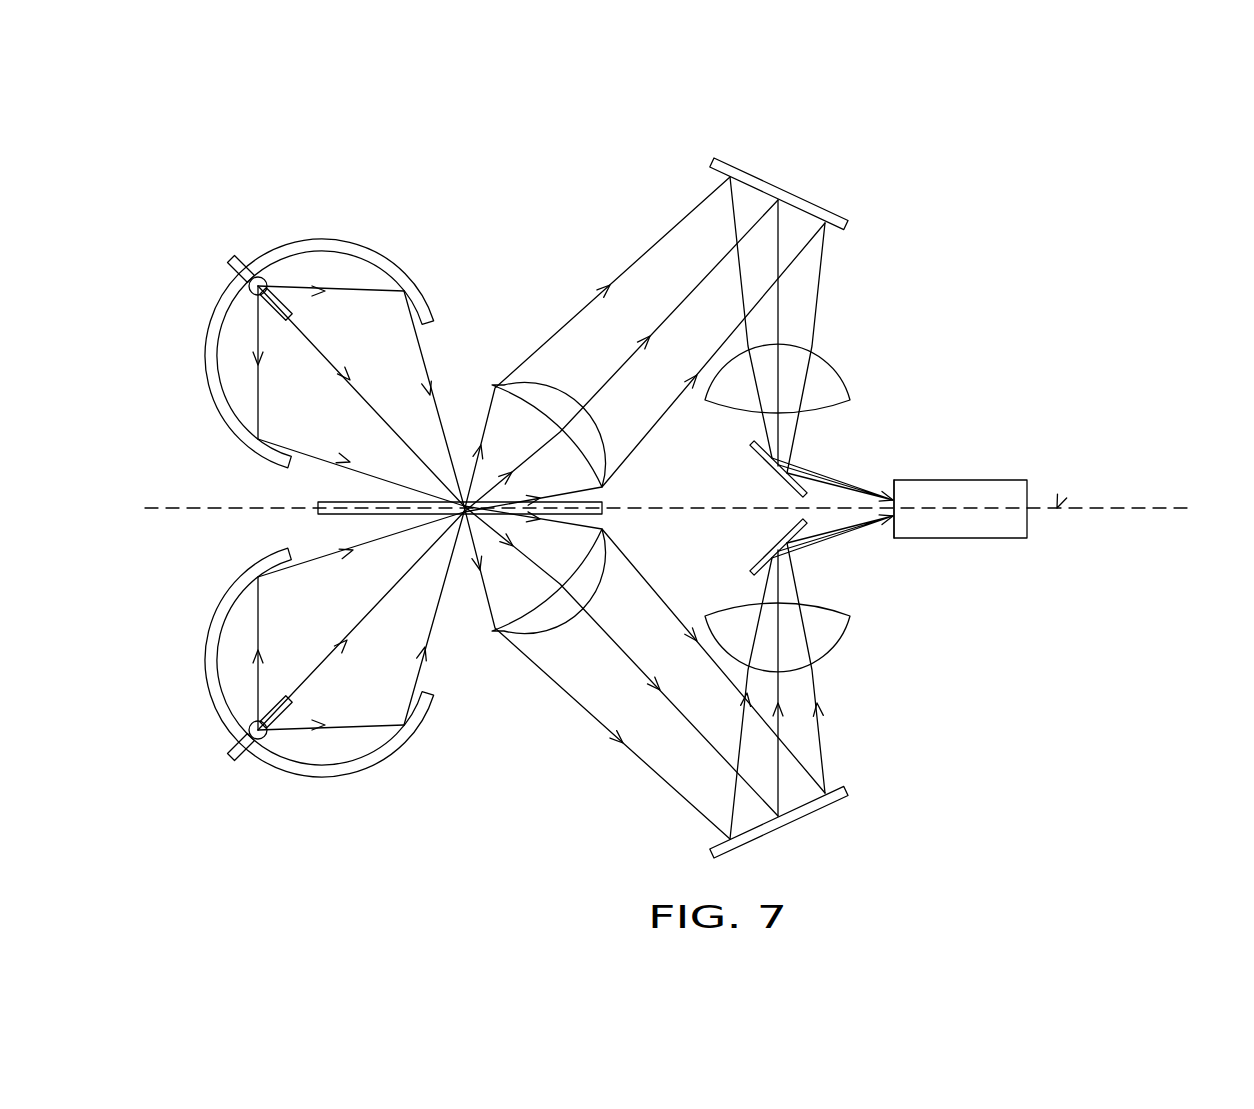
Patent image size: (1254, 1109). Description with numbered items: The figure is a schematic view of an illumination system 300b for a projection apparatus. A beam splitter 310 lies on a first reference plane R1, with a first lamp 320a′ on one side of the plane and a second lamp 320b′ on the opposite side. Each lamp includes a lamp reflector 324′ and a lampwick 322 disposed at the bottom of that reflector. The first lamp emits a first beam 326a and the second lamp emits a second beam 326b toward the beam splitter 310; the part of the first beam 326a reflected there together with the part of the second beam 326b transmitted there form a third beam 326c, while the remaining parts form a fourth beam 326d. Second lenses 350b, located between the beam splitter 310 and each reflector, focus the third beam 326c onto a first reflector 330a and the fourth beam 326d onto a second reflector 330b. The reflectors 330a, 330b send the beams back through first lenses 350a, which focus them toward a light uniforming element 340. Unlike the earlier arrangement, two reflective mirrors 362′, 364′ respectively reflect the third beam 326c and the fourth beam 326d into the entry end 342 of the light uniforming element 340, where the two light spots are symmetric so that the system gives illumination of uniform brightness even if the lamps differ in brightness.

The illumination system 300b is at (1233, 847).
The beam splitter 310 is at (322, 511).
The first lamp 320a′ is at (332, 152).
The second lamp 320b′ is at (332, 866).
The lampwick 322 is at (263, 278).
The lamp reflector 324′ is at (313, 238).
The first beam 326a is at (423, 362).
The second beam 326b is at (440, 602).
The third beam 326c is at (648, 250).
The fourth beam 326d is at (655, 768).
The first reflector 330a is at (758, 173).
The second reflector 330b is at (803, 815).
The light uniforming element 340 is at (952, 488).
The entry end 342 is at (898, 516).
The first lenses 350a is at (833, 385).
The second lenses 350b is at (530, 397).
The reflective mirror 362′ is at (768, 460).
The reflective mirror 364′ is at (765, 557).
The first reference plane R1 is at (1057, 508).